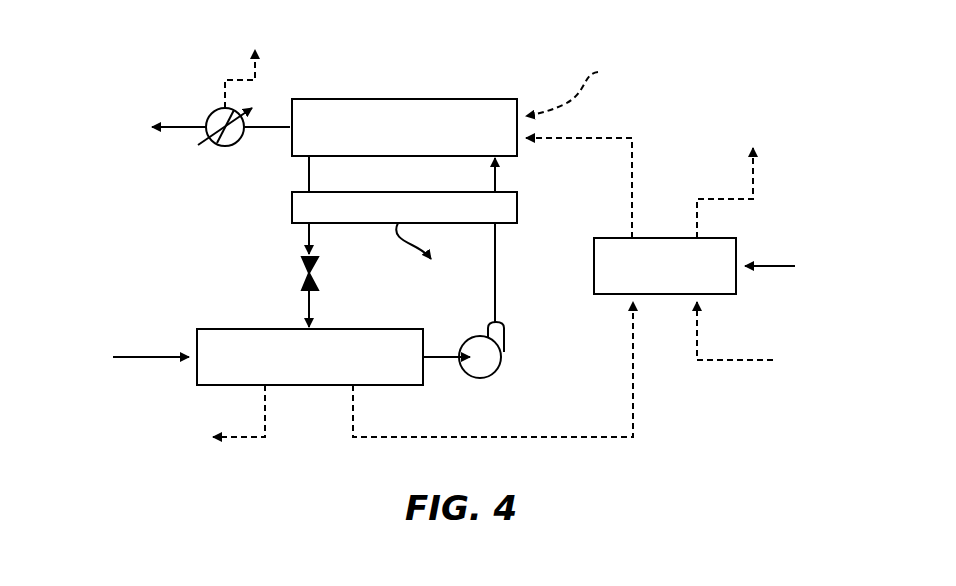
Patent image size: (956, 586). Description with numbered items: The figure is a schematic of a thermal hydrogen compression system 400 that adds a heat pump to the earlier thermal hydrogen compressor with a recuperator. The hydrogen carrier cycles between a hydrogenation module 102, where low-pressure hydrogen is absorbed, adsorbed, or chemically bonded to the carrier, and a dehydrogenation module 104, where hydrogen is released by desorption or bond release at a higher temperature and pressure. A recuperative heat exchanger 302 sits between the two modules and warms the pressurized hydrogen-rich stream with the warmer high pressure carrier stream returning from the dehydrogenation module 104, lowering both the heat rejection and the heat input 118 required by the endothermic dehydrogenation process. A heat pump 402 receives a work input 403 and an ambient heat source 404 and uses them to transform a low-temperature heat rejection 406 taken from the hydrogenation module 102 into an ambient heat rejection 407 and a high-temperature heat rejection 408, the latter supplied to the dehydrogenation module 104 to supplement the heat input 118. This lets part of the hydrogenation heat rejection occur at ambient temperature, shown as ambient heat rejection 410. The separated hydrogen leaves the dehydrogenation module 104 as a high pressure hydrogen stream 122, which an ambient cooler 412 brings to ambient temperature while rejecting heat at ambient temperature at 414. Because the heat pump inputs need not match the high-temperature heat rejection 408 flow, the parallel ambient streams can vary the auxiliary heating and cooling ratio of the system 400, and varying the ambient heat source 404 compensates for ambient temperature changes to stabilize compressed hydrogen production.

The thermal hydrogen compression system 400 is at (104, 65).
The hydrogenation module 102 is at (236, 329).
The dehydrogenation module 104 is at (467, 99).
The heat input 118 is at (573, 80).
The high pressure hydrogen stream 122 is at (185, 126).
The recuperative heat exchanger 302 is at (517, 205).
The heat pump 402 is at (611, 294).
The work input 403 is at (776, 268).
The ambient heat source 404 is at (736, 362).
The low-temperature heat rejection 406 is at (634, 437).
The ambient heat rejection 407 is at (753, 199).
The high-temperature heat rejection 408 is at (632, 140).
The ambient heat rejection 410 is at (264, 437).
The ambient cooler 412 is at (238, 145).
The heat rejection at ambient temperature 414 is at (225, 80).